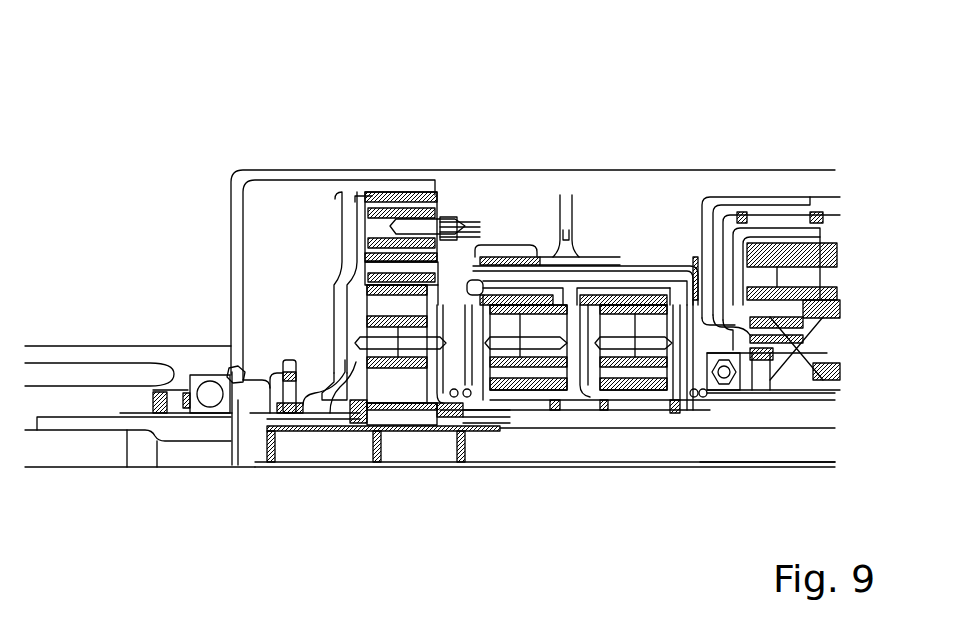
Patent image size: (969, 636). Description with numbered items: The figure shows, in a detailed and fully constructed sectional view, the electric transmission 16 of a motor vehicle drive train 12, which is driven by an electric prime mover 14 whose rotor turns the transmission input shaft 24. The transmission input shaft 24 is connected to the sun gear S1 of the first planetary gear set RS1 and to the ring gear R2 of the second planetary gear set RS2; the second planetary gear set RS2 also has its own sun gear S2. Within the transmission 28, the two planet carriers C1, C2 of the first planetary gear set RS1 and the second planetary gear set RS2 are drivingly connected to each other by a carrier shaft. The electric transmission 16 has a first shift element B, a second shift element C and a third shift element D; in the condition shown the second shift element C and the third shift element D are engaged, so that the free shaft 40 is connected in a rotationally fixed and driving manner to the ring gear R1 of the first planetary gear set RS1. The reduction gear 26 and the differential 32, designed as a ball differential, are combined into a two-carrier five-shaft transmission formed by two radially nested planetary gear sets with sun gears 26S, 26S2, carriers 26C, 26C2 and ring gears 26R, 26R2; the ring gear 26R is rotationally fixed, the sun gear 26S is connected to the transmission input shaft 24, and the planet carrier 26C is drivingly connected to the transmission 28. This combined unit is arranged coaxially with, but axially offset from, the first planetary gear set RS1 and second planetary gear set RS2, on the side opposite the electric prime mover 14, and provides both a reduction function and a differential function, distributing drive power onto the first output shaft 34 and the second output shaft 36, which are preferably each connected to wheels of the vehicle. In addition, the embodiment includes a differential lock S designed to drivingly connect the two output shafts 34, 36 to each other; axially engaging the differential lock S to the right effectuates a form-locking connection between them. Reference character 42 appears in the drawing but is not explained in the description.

The motor vehicle drive train 12 is at (192, 97).
The electric prime mover 14 is at (778, 150).
The electric transmission 16 is at (160, 104).
The transmission input shaft 24 is at (742, 427).
The reduction gear 26 is at (395, 138).
The planet carrier of the reduction gear 26C is at (437, 407).
The second carrier of the reduction gear 26C2 is at (356, 248).
The ring gear of the reduction gear 26R is at (360, 291).
The second ring gear of the reduction gear 26R2 is at (373, 200).
The sun gear of the reduction gear 26S is at (365, 410).
The second sun gear of the reduction gear 26S2 is at (364, 256).
The transmission 28 is at (587, 477).
The differential 32 is at (429, 128).
The first output shaft 34 is at (800, 465).
The second output shaft 36 is at (85, 467).
The free shaft 40 is at (605, 258).
The piston rod 42 is at (559, 196).
The first shift element B is at (628, 248).
The second shift element C is at (503, 234).
The planet carrier of the first planetary gear set C1 is at (538, 410).
The planet carrier of the second planetary gear set C2 is at (672, 400).
The third shift element D is at (492, 268).
The ring gear of the first planetary gear set R1 is at (555, 297).
The ring gear of the second planetary gear set R2 is at (660, 295).
The first planetary gear set RS1 is at (544, 477).
The second planetary gear set RS2 is at (619, 477).
The differential lock S is at (289, 349).
The sun gear of the first planetary gear set S1 is at (492, 400).
The sun gear of the second planetary gear set S2 is at (617, 400).